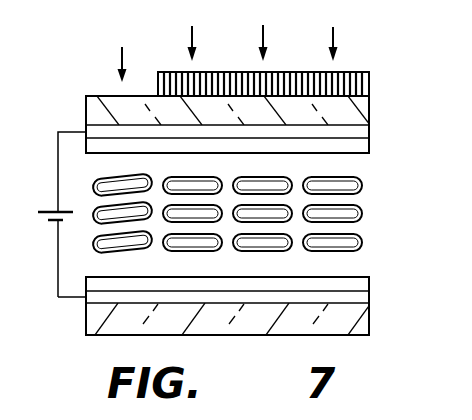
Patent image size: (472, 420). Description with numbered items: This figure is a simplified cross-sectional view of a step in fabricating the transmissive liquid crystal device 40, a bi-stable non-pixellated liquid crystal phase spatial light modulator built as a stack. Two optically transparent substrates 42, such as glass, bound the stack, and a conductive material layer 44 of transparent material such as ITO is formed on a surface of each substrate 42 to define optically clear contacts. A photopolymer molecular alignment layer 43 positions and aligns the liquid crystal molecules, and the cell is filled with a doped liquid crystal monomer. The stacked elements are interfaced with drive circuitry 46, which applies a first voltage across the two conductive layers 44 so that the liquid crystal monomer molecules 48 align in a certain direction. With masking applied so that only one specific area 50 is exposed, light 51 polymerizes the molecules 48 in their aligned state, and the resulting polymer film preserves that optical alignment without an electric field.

The transmissive liquid crystal device 40 is at (88, 375).
The substrate 42 is at (372, 101).
The photopolymer molecular alignment layer 43 is at (372, 145).
The conductive material layer 44 is at (372, 128).
The drive circuitry 46 is at (63, 131).
The liquid crystal monomer molecules 48 is at (363, 210).
The specific area 50 is at (100, 47).
The light 51 is at (124, 52).